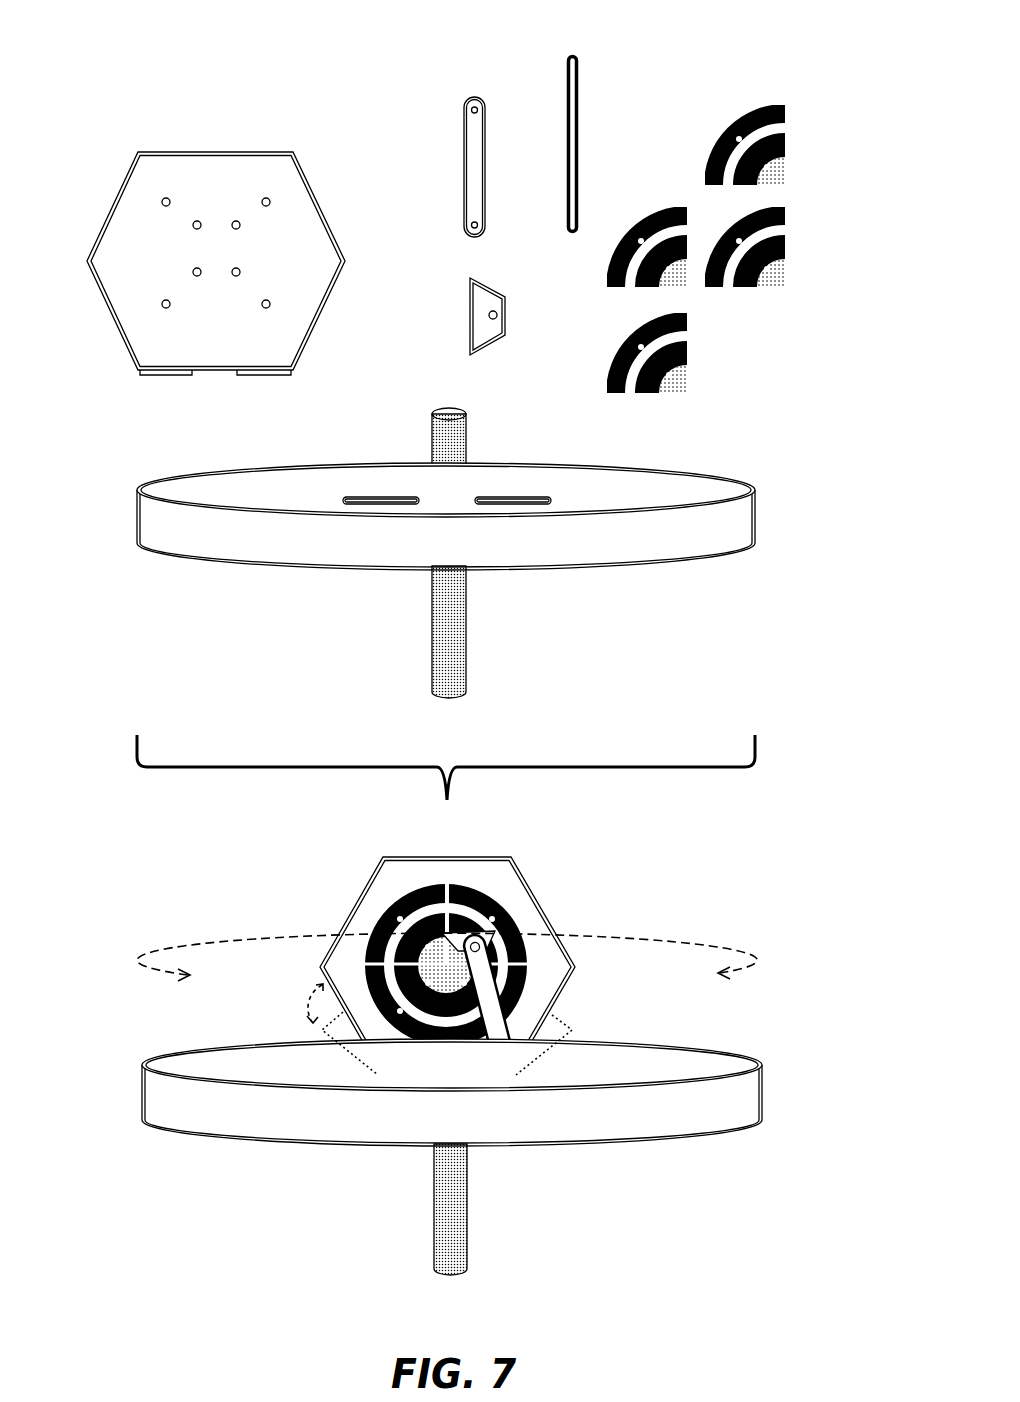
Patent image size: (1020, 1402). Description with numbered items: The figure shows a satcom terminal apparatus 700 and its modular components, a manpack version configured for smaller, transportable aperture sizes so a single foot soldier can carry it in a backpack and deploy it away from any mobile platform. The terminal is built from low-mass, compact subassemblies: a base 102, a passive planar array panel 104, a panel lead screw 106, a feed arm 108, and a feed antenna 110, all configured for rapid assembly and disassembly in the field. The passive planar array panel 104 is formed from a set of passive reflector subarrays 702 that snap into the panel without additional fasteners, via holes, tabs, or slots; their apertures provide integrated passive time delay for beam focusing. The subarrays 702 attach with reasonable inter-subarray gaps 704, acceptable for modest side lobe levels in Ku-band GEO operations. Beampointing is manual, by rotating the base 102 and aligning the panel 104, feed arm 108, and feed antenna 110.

The satcom terminal apparatus 700 is at (212, 48).
The base 102 is at (720, 495).
The passive planar array panel 104 is at (258, 180).
The panel lead screw 106 is at (567, 78).
The feed arm 108 is at (468, 142).
The feed antenna 110 is at (470, 322).
The passive reflector subarrays 702 is at (747, 113).
The inter-subarray gaps 704 is at (375, 963).